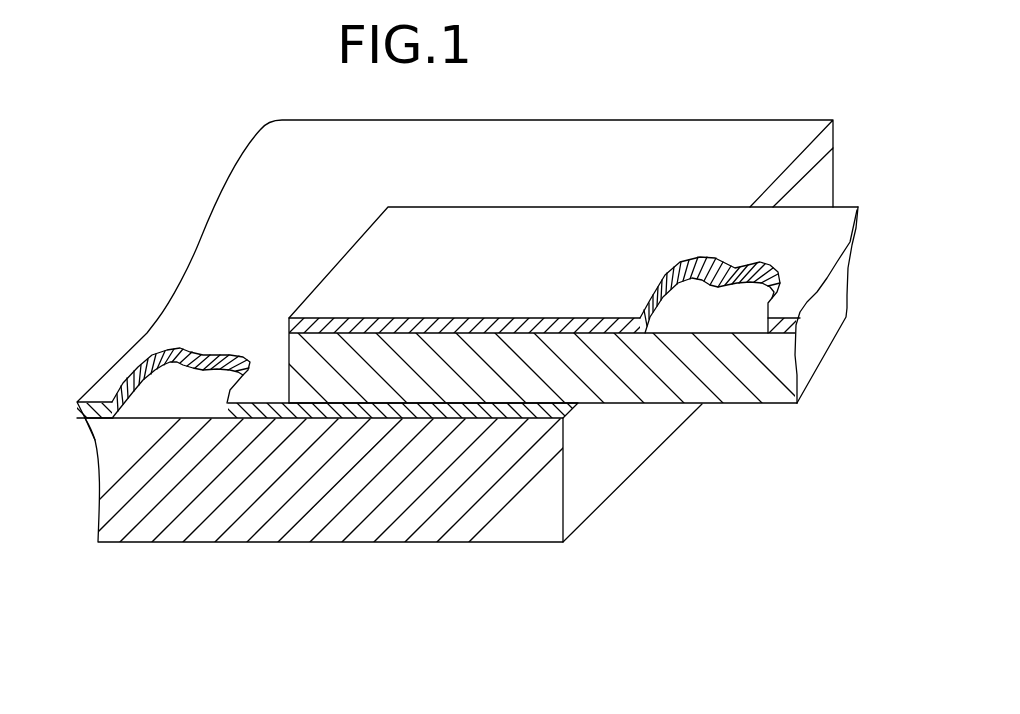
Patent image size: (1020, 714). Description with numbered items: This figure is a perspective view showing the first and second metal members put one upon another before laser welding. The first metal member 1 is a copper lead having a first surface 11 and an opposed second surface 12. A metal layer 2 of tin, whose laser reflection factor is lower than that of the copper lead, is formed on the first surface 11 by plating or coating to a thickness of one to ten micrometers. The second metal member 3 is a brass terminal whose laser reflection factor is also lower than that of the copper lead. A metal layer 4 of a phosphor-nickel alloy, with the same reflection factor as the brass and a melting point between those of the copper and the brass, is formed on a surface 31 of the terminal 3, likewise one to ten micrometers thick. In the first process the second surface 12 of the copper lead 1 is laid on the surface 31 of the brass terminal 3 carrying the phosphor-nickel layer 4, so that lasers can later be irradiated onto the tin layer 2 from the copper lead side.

The first metal member 1 is at (762, 392).
The metal layer 2 is at (790, 332).
The second metal member 3 is at (618, 481).
The metal layer 4 is at (85, 403).
The first surface 11 is at (727, 305).
The second surface 12 is at (718, 405).
The surface 31 is at (187, 383).